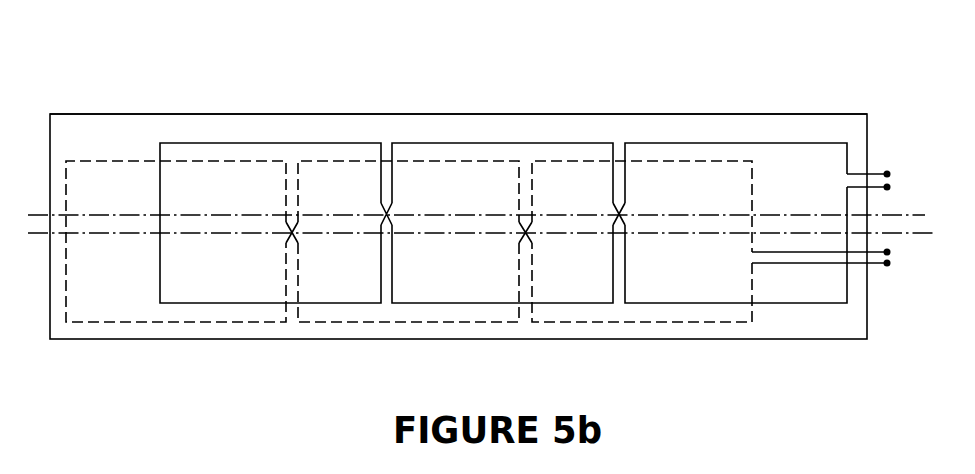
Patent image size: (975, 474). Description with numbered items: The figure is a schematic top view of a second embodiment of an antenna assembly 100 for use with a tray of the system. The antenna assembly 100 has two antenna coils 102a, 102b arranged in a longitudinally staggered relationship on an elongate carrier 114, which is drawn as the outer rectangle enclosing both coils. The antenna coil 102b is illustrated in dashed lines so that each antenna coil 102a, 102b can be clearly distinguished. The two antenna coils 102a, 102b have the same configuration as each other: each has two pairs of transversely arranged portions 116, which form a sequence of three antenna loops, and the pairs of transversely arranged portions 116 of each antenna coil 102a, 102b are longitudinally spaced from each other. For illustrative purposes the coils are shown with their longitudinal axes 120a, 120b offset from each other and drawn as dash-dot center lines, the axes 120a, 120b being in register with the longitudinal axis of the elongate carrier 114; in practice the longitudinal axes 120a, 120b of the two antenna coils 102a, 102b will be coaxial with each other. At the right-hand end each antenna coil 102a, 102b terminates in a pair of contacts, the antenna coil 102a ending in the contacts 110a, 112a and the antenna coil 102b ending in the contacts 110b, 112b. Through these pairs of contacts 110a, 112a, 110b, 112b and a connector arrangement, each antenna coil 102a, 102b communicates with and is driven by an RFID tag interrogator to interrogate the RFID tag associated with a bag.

The antenna assembly 100 is at (642, 113).
The antenna coil 102a is at (233, 142).
The antenna coil 102b is at (220, 323).
The contact 110a is at (887, 174).
The contact 112a is at (887, 187).
The contact 110b is at (887, 252).
The contact 112b is at (887, 263).
The elongate carrier 114 is at (329, 113).
The transversely arranged portions 116 is at (522, 232).
The longitudinal axis 120a is at (372, 214).
The longitudinal axis 120b is at (93, 233).